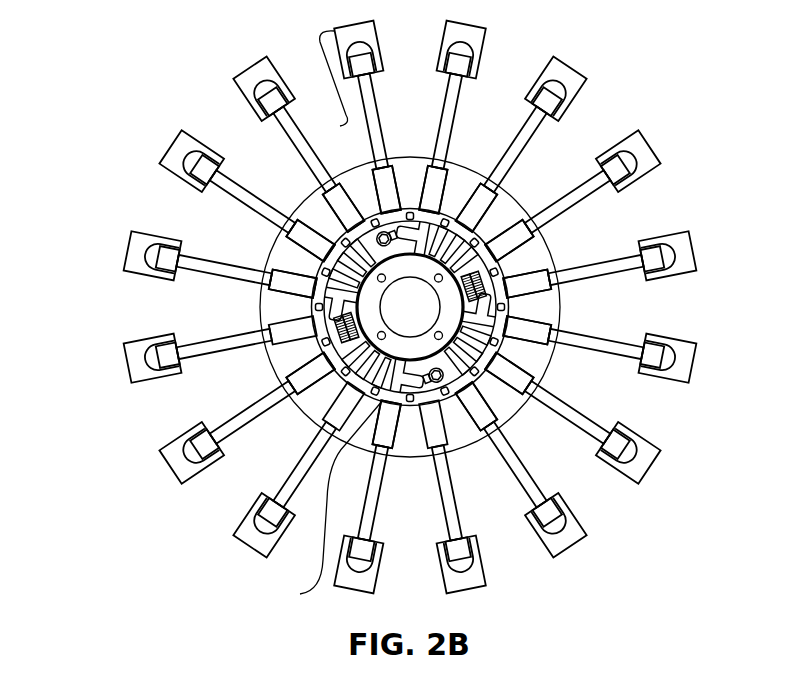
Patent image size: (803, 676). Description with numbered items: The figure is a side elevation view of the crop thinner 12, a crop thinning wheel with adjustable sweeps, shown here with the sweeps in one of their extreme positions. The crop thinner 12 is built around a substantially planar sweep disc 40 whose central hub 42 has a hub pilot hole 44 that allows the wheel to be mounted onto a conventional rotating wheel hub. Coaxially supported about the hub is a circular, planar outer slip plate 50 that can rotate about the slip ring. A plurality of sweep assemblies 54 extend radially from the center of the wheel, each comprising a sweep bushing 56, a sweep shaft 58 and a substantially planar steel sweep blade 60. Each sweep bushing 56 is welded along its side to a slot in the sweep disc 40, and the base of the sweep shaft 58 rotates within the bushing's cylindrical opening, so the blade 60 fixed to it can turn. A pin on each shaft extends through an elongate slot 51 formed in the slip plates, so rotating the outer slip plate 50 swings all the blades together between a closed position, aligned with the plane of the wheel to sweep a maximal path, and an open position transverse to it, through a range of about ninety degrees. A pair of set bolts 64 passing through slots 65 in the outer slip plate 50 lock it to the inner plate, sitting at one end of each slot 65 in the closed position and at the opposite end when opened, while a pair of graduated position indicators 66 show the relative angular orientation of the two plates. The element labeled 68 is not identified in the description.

The crop thinner 12 is at (133, 493).
The sweep disc 40 is at (317, 217).
The central hub 42 is at (270, 265).
The hub pilot hole 44 is at (410, 307).
The outer slip plate 50 is at (485, 268).
The elongate slot 51 is at (489, 284).
The sweep assembly 54 is at (340, 126).
The sweep bushing 56 is at (437, 423).
The sweep shaft 58 is at (222, 342).
The sweep blade 60 is at (255, 537).
The set bolt 64 is at (300, 594).
The slot 65 is at (419, 208).
The graduated position indicator 66 is at (506, 305).
The spring seat bracket 68 is at (492, 296).